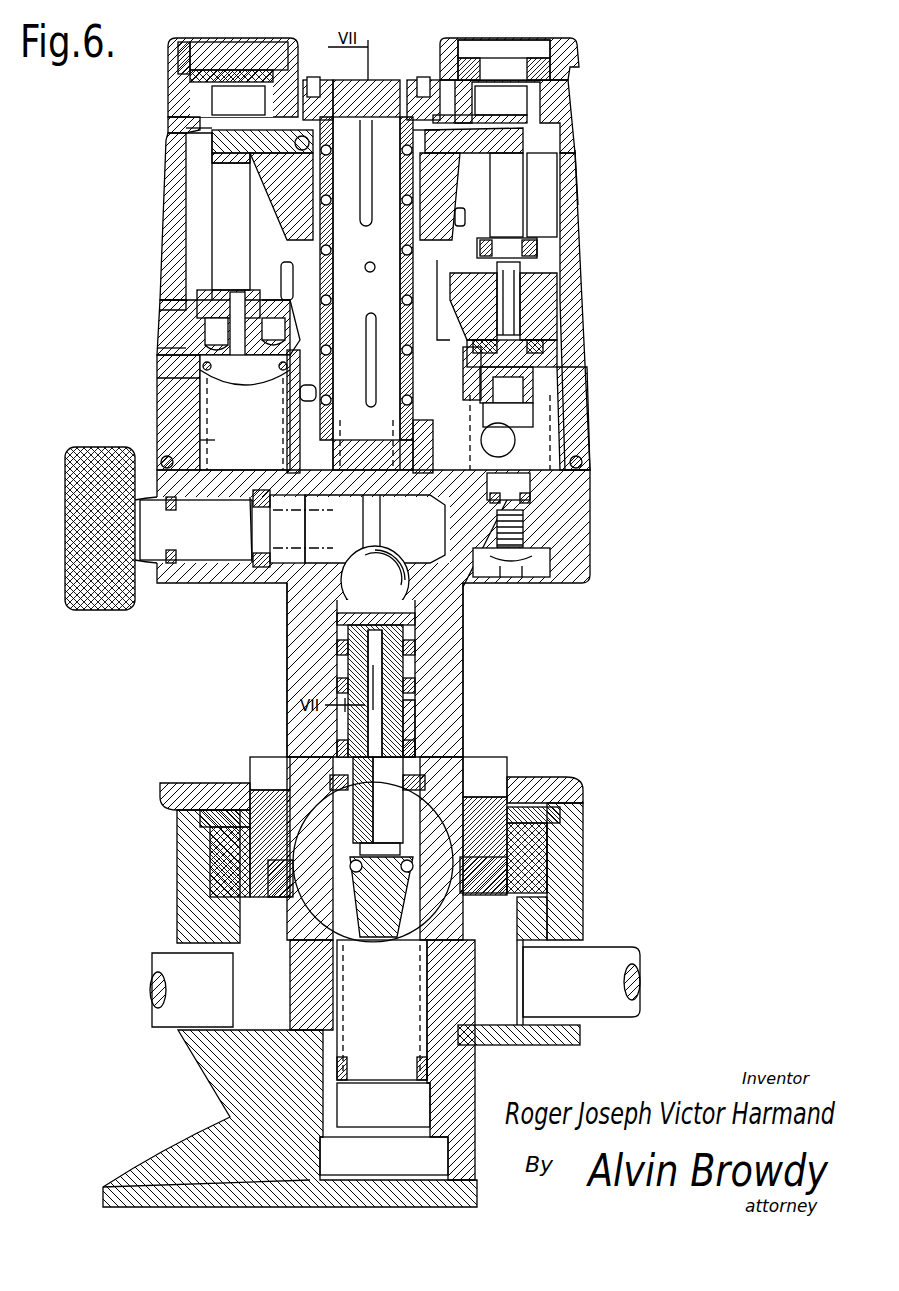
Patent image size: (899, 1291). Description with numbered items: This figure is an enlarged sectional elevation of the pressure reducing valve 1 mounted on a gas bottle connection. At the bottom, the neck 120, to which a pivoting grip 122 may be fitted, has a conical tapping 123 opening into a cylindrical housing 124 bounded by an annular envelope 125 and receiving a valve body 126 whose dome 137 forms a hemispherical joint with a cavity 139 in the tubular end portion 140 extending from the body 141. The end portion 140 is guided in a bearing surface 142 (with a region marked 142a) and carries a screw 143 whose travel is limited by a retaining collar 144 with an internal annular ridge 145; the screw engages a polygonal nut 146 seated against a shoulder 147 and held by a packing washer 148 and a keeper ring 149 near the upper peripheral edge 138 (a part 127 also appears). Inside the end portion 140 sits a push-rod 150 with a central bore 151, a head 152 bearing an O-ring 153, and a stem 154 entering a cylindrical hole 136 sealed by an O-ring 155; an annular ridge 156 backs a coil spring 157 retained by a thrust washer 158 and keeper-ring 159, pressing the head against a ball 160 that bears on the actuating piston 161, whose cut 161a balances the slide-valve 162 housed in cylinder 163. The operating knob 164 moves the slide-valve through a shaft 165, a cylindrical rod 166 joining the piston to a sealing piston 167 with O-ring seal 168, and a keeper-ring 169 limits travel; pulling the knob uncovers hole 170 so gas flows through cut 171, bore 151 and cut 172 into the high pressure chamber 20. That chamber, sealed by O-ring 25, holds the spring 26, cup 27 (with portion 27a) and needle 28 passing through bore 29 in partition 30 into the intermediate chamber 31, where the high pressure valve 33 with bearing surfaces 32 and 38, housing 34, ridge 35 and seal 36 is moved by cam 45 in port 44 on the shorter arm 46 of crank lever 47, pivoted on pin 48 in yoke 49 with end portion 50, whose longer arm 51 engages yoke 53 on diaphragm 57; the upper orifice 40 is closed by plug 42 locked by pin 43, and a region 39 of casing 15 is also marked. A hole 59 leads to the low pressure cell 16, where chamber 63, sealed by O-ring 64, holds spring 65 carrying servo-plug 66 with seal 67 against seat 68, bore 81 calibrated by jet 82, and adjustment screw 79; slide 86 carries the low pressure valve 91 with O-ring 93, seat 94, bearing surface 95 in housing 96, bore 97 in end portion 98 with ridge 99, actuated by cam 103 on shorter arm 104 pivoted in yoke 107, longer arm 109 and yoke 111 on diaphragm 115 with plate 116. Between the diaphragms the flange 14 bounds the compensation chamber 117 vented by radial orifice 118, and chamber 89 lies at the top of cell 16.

The pressure reducing valve 1 is at (591, 206).
The annular flange 14 is at (366, 86).
The casing (high pressure cell) 15 is at (163, 190).
The casing (low pressure cell) 16 is at (580, 152).
The high pressure chamber 20 is at (245, 412).
The O-ring 25 is at (162, 457).
The elastic member (compression coil spring) 26 is at (262, 378).
The cup 27 is at (176, 395).
The wall portion 27a is at (172, 383).
The needle 28 is at (220, 378).
The bore 29 is at (186, 349).
The partition 30 is at (186, 312).
The intermediate chamber 31 is at (200, 216).
The triangular bearing surface 32 is at (238, 290).
The high pressure valve 33 is at (231, 221).
The cylindrical housing 34 is at (186, 336).
The annular ridge 35 is at (278, 326).
The seal 36 is at (210, 290).
The triangular bearing surface 38 is at (238, 100).
The housing portion 39 is at (176, 115).
The machined orifice 40 is at (282, 46).
The threaded plug 42 is at (222, 46).
The pin 43 is at (186, 46).
The transverse port 44 is at (214, 150).
The cam 45 is at (212, 134).
The shorter arm 46 is at (262, 160).
The crank lever 47 is at (246, 180).
The pin 48 is at (331, 152).
The yoke 49 is at (309, 143).
The end portion 50 is at (314, 78).
The longer arm 51 is at (292, 202).
The yoke 53 is at (282, 272).
The flexible diaphragm 57 is at (367, 360).
The hole 59 is at (312, 394).
The intermediate chamber 63 is at (515, 440).
The O-ring 64 is at (582, 459).
The compression coil spring 65 is at (588, 391).
The servo-plug 66 is at (446, 346).
The annular seal 67 is at (546, 358).
The seat 68 is at (546, 332).
The adjustment screw 79 is at (552, 562).
The central bore 81 is at (588, 362).
The restrictor or jet 82 is at (535, 396).
The slide 86 is at (520, 302).
The low pressure chamber 89 is at (542, 195).
The low pressure valve 91 is at (506, 195).
The O-ring 93 is at (540, 248).
The frusto-conical seat 94 is at (538, 276).
The triangular bearing surface 95 is at (501, 100).
The cylindrical housing 96 is at (574, 96).
The bore 97 is at (505, 40).
The end portion 98 is at (577, 66).
The peripheral external ridge 99 is at (575, 46).
The cam 103 is at (530, 122).
The shorter arm 104 is at (474, 156).
The yoke 107 is at (426, 78).
The longer arm 109 is at (447, 216).
The yoke 111 is at (477, 221).
The diaphragm 115 is at (408, 166).
The bulged plate 116 is at (412, 136).
The central capacity (compensation and absorption chamber) 117 is at (360, 173).
The radial orifice 118 is at (368, 262).
The neck 120 is at (226, 1094).
The pivoting grip 122 is at (620, 956).
The conical tapping 123 is at (384, 1156).
The cylindrical housing 124 is at (241, 985).
The annular envelope 125 is at (200, 912).
The valve body 126 is at (442, 1002).
The chamber 127 is at (330, 1110).
The cylindrical hole 136 is at (516, 797).
The dome 137 is at (382, 1010).
The upper peripheral edge 138 is at (580, 790).
The cavity 139 is at (472, 797).
The tubular end portion 140 is at (288, 620).
The body 141 is at (580, 502).
The cylindrical bearing surface 142 is at (549, 867).
The nut portion 142a is at (569, 850).
The screw 143 is at (268, 790).
The retaining collar 144 is at (500, 882).
The internal annular ridge 145 is at (560, 816).
The polygonal nut 146 is at (216, 853).
The shoulder 147 is at (270, 876).
The packing washer 148 is at (206, 816).
The keeper ring 149 is at (190, 795).
The push-rod 150 is at (420, 612).
The central bore 151 is at (380, 646).
The head (piston) 152 is at (345, 656).
The sealing O-ring 153 is at (412, 654).
The stem 154 is at (402, 726).
The O-ring 155 is at (422, 790).
The annular ridge 156 is at (338, 682).
The compression coil spring 157 is at (416, 682).
The thrust washer 158 is at (338, 736).
The keeper-ring 159 is at (332, 777).
The ball 160 is at (375, 580).
The actuating piston 161 is at (405, 529).
The cut 161a is at (432, 420).
The slide-valve 162 is at (258, 568).
The cylinder 163 is at (352, 460).
The operating knob 164 is at (82, 447).
The shaft 165 is at (196, 530).
The cylindrical rod 166 is at (375, 529).
The sealing piston 167 is at (303, 529).
The O-ring seal 168 is at (262, 582).
The keeper-ring 169 is at (170, 565).
The hole 170 is at (276, 462).
The cut 171 is at (356, 870).
The cut 172 is at (386, 628).